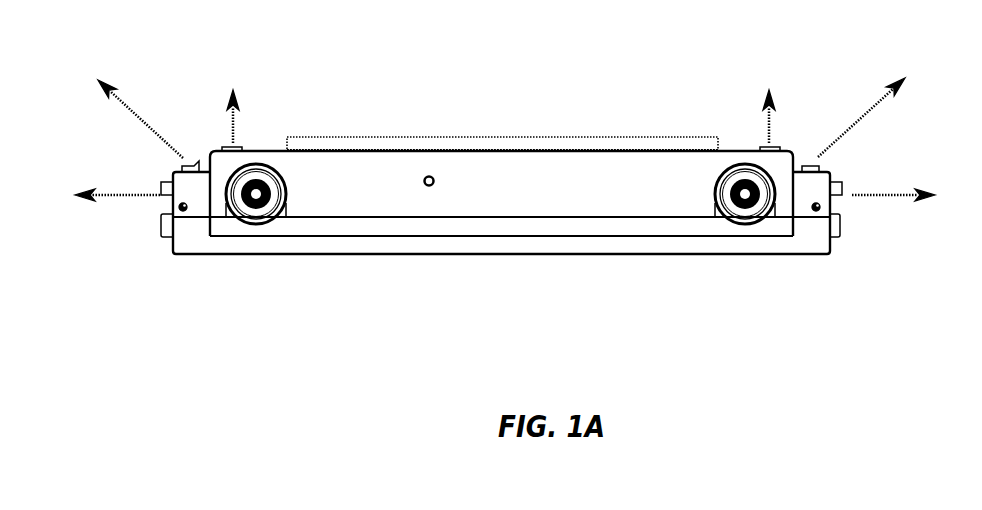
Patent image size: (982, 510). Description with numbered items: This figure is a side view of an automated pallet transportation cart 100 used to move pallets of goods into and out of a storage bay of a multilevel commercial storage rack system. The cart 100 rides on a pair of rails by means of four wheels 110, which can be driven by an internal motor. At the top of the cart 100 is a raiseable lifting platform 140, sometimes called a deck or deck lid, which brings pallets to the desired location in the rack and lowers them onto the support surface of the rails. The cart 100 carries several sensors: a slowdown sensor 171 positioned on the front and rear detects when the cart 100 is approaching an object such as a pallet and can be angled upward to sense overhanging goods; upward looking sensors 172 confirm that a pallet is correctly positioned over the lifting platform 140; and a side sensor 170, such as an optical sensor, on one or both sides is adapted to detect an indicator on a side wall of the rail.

The automated pallet transportation cart 100 is at (345, 288).
The wheels 110 is at (245, 218).
The raiseable lifting platform 140 is at (597, 137).
The side sensor 170 is at (433, 185).
The slowdown sensor 171 is at (163, 185).
The upward looking sensors 172 is at (229, 144).